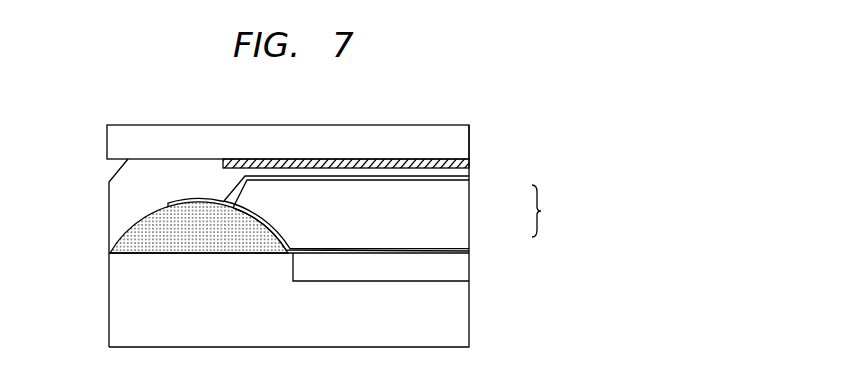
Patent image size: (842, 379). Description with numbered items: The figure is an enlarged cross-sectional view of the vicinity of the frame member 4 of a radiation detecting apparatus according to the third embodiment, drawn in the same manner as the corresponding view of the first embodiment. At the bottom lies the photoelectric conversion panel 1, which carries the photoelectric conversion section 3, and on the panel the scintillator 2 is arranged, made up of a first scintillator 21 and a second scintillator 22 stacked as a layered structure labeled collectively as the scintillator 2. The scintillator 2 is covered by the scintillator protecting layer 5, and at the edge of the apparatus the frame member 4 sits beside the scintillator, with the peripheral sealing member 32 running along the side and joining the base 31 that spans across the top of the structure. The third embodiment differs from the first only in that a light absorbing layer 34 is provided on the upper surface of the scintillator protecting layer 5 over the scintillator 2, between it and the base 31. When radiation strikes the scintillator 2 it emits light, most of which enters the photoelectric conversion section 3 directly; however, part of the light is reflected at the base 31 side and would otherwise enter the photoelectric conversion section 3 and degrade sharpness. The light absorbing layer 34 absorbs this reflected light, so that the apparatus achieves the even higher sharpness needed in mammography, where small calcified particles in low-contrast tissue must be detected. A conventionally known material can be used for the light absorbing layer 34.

The photoelectric conversion panel 1 is at (118, 298).
The scintillator 2 is at (543, 211).
The first scintillator 21 is at (460, 244).
The second scintillator 22 is at (463, 203).
The photoelectric conversion section 3 is at (462, 268).
The frame member 4 is at (137, 235).
The scintillator protecting layer 5 is at (197, 198).
The base 31 is at (427, 133).
The peripheral sealing member 32 is at (108, 193).
The light absorbing layer 34 is at (365, 162).